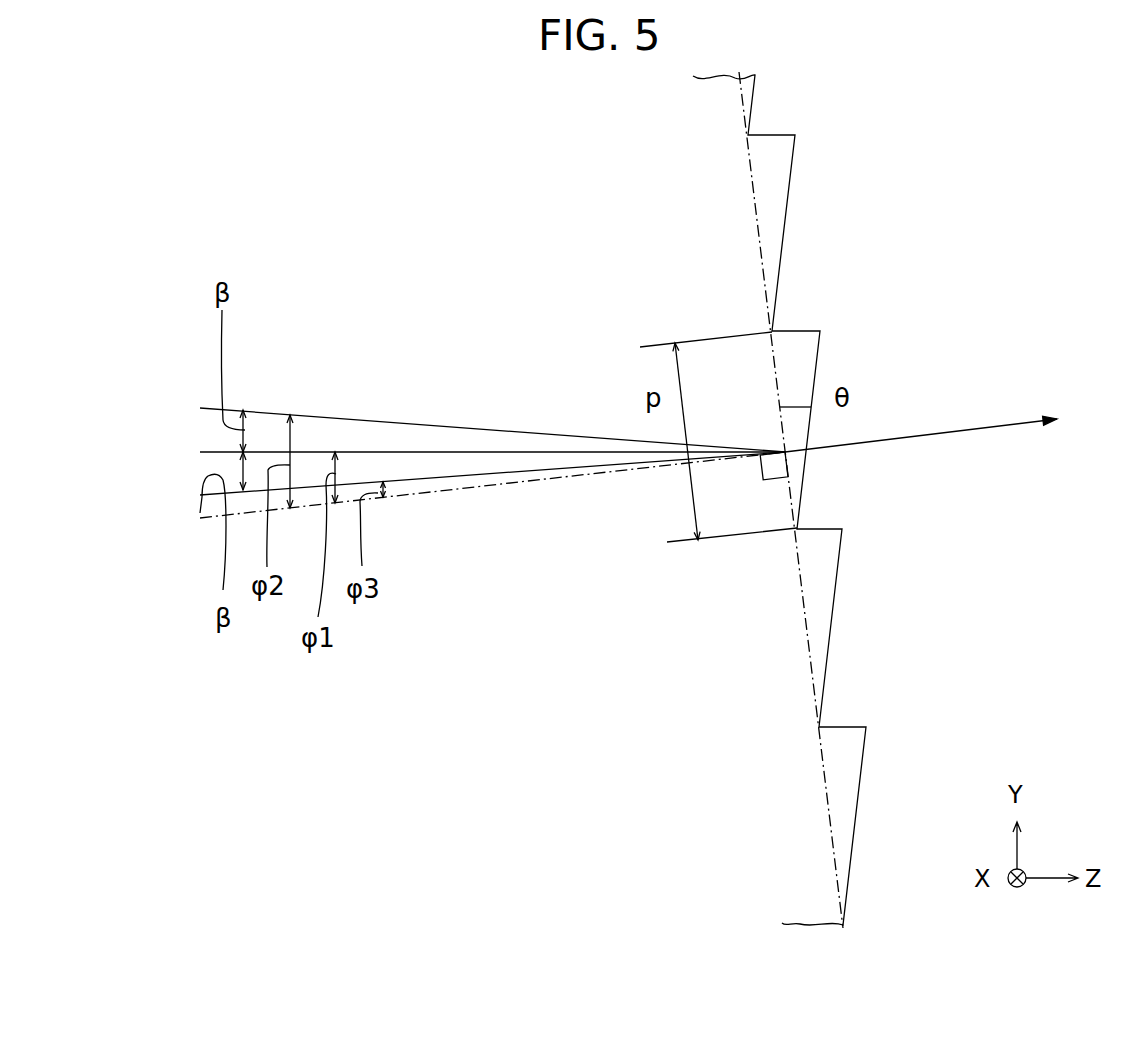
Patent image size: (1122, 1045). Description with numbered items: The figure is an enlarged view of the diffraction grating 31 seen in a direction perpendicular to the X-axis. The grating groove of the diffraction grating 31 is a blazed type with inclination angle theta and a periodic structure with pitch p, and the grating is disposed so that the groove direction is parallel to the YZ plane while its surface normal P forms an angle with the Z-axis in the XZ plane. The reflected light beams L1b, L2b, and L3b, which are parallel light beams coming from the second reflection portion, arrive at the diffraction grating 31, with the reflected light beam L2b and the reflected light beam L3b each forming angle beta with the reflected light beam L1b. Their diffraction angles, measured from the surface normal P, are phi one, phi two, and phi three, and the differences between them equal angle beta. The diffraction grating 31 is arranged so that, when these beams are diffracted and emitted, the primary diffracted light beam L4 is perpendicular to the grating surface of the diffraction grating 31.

The diffraction grating 31 is at (792, 162).
The reflected light beam L1b is at (205, 451).
The reflected light beam L2b is at (205, 406).
The reflected light beam L3b is at (203, 497).
The primary diffracted light beam L4 is at (958, 430).
The surface normal P is at (483, 488).